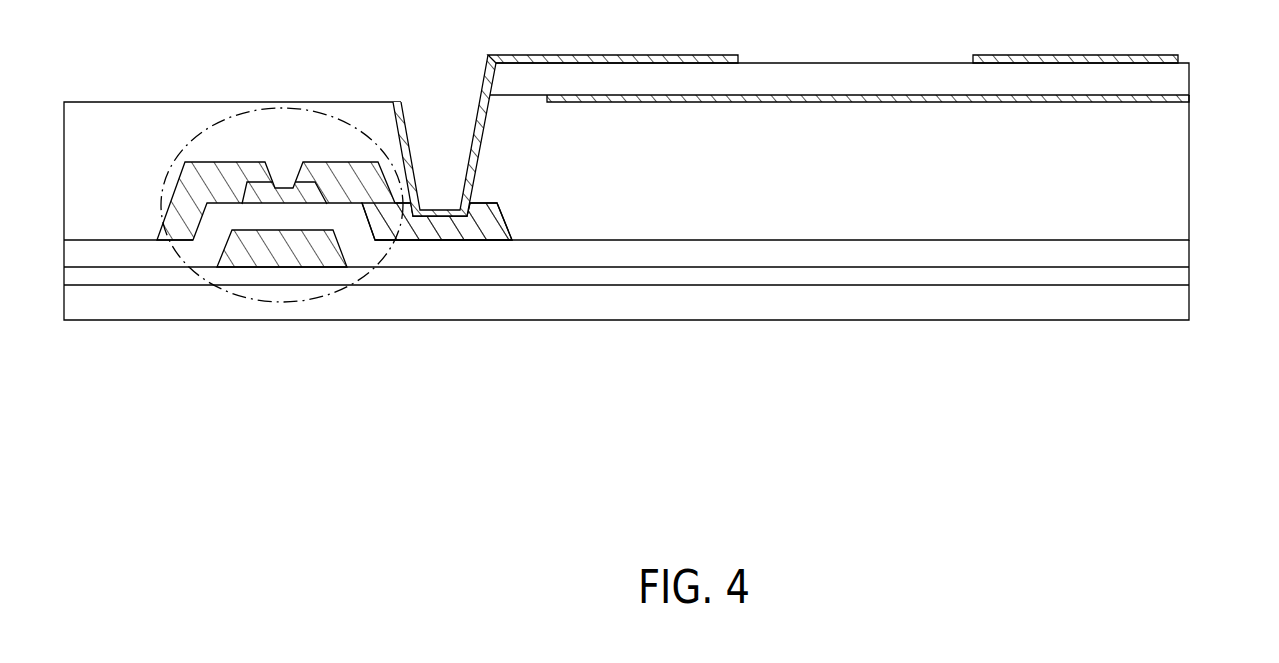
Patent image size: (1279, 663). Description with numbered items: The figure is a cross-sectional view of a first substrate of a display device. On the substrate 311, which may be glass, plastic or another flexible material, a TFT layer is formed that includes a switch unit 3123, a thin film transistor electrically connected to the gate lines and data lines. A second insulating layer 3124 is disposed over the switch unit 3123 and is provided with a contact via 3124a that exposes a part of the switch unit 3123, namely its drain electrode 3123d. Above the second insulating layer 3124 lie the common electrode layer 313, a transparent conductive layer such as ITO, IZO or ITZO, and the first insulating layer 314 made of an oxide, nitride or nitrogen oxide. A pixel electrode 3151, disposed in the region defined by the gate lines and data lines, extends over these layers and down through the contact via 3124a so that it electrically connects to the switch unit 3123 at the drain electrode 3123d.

The substrate 311 is at (1183, 303).
The common electrode layer 313 is at (1190, 98).
The first insulating layer 314 is at (1183, 78).
The pixel electrode 3151 is at (1178, 58).
The switch unit 3123 is at (277, 303).
The drain electrode 3123d is at (438, 228).
The second insulating layer 3124 is at (1183, 173).
The contact via 3124a is at (477, 138).